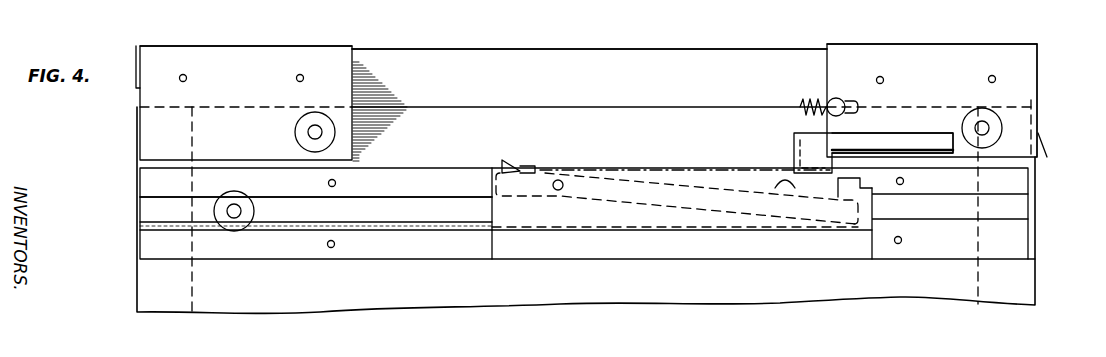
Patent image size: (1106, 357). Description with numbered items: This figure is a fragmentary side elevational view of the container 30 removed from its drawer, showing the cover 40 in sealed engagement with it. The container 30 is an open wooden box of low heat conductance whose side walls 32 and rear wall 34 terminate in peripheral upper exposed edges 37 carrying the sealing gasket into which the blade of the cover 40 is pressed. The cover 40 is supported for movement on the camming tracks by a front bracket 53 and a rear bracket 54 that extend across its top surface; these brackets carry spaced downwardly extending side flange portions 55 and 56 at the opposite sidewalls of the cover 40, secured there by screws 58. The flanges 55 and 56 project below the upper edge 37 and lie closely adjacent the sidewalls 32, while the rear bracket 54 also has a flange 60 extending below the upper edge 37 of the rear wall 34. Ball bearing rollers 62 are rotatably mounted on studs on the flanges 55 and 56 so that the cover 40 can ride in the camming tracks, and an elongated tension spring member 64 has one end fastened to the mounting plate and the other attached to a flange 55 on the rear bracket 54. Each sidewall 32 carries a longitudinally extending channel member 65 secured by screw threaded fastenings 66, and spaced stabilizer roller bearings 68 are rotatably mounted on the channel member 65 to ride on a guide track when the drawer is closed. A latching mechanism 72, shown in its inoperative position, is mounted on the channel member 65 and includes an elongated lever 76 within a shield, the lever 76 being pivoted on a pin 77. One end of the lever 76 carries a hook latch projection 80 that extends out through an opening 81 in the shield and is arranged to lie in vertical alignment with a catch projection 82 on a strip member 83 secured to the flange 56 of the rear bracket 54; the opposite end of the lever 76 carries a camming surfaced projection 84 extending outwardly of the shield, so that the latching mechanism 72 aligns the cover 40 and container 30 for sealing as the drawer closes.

The container 30 is at (1040, 198).
The side walls 32 is at (1030, 282).
The rear wall 34 is at (1036, 230).
The peripheral upper exposed edges 37 is at (483, 107).
The cover 40 is at (589, 48).
The front cover bracket 53 is at (284, 46).
The rear cover bracket 54 is at (911, 44).
The side flange portion 55 is at (263, 83).
The side flange portion 56 is at (967, 96).
The screws 58 is at (186, 74).
The flange 60 is at (1040, 68).
The ball bearing rollers 62 is at (295, 133).
The tension spring member 64 is at (807, 100).
The channel member 65 is at (428, 196).
The screw threaded fastenings 66 is at (335, 186).
The stabilizer roller bearings 68 is at (240, 225).
The latching mechanism 72 is at (621, 168).
The lever 76 is at (686, 188).
The pin 77 is at (559, 190).
The hook latch projection 80 is at (855, 181).
The opening 81 is at (775, 184).
The catch projection 82 is at (793, 141).
The strip member 83 is at (898, 140).
The camming surfaced projection 84 is at (513, 163).